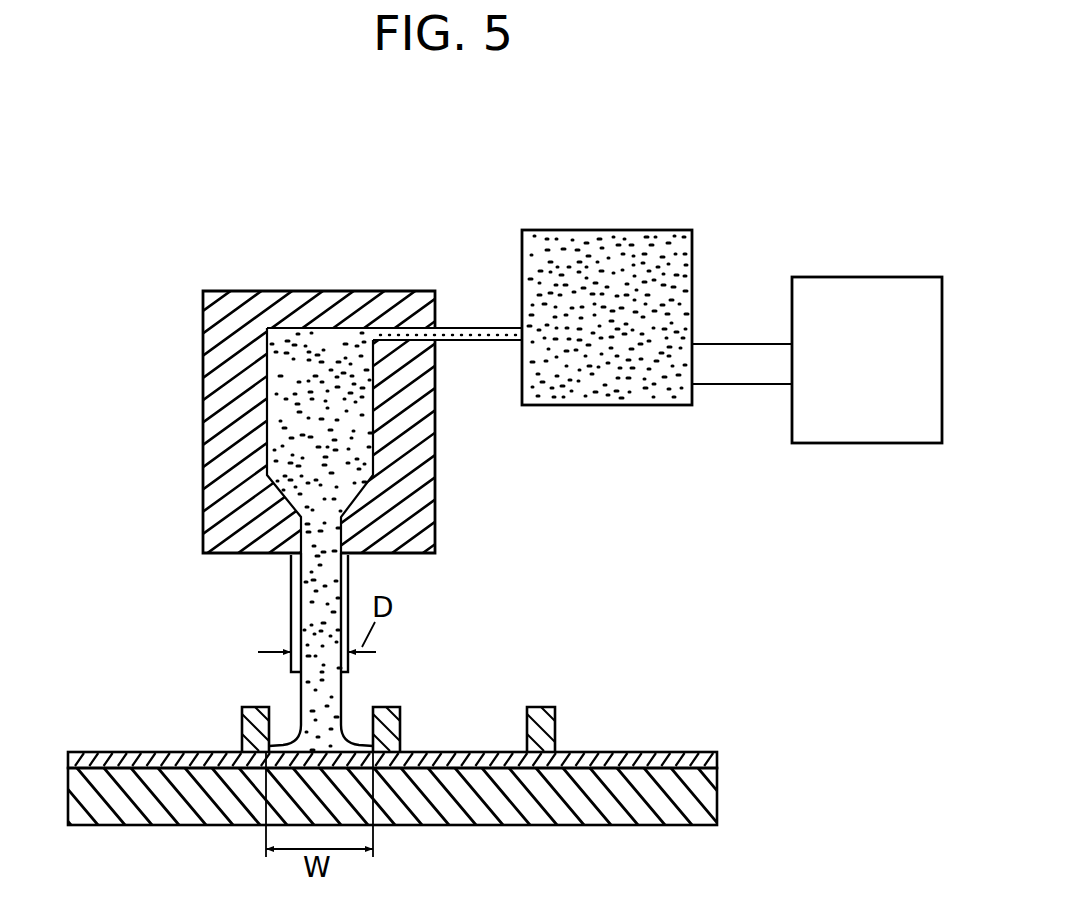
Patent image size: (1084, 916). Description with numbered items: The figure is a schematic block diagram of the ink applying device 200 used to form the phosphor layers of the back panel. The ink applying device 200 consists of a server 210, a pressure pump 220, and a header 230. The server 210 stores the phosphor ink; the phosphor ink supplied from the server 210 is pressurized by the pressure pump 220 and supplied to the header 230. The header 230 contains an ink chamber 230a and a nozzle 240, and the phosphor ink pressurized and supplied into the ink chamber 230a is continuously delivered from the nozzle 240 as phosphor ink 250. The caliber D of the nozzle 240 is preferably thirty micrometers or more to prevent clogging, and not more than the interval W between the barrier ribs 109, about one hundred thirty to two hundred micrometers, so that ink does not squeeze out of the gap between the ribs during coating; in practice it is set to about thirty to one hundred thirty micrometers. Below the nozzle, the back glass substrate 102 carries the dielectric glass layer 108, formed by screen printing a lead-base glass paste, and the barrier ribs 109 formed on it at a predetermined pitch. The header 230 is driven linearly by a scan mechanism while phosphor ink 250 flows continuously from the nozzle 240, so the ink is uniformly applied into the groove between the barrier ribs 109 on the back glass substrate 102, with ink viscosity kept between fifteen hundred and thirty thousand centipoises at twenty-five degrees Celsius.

The ink applying device 200 is at (438, 263).
The header 230 is at (435, 530).
The ink chamber 230a is at (280, 410).
The pressure pump 220 is at (615, 407).
The server 210 is at (870, 443).
The nozzle 240 is at (290, 623).
The phosphor ink 250 is at (340, 713).
The barrier ribs 109 is at (527, 708).
The dielectric glass layer 108 is at (718, 762).
The back glass substrate 102 is at (718, 795).